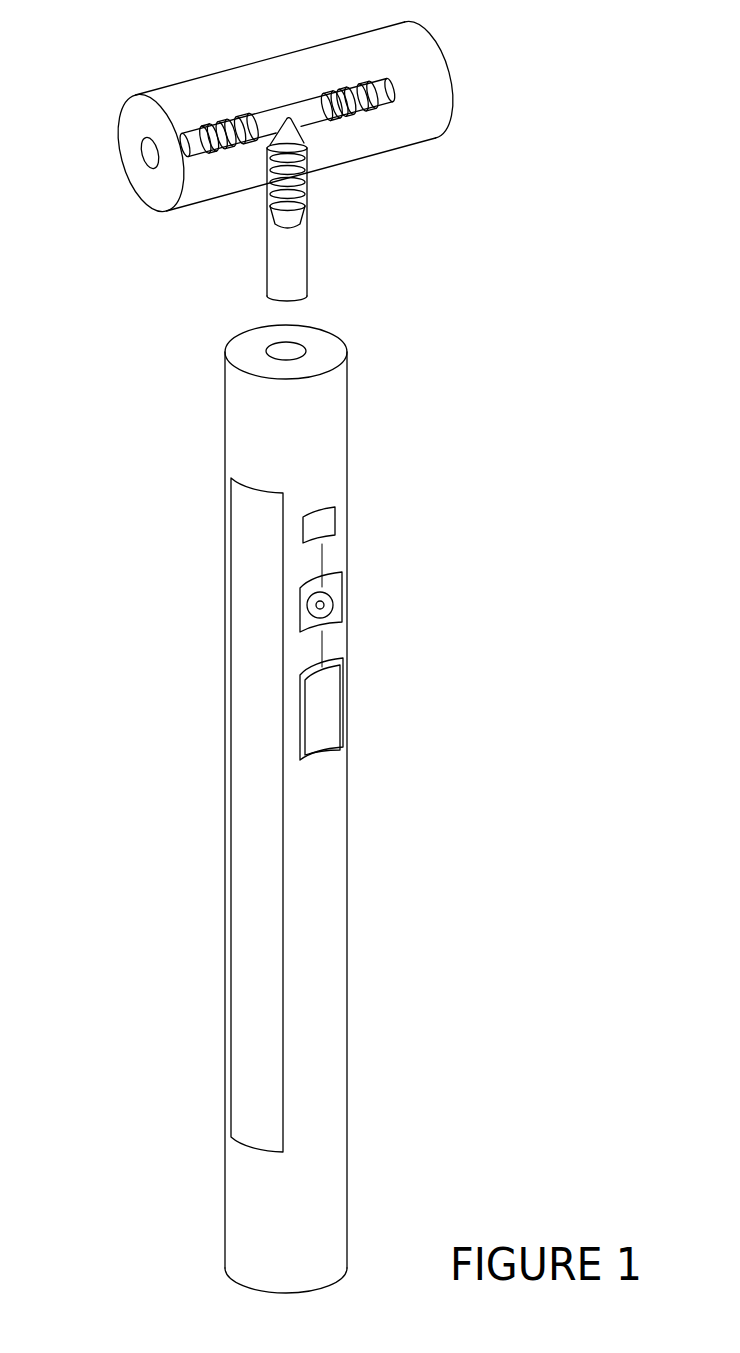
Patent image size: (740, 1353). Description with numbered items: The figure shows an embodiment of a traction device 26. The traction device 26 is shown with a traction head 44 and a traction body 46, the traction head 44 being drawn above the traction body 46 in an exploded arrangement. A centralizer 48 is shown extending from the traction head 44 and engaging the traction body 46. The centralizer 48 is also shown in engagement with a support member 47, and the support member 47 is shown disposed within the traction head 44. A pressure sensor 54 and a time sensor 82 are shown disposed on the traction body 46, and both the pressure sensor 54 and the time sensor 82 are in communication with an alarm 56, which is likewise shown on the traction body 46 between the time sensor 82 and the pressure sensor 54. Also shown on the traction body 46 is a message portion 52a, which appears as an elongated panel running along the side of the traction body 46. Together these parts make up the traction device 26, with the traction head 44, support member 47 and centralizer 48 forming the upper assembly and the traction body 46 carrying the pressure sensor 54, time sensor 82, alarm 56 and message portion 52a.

The traction device 26 is at (134, 50).
The traction head 44 is at (132, 122).
The support member 47 is at (299, 103).
The centralizer 48 is at (297, 268).
The traction body 46 is at (338, 905).
The message portion 52a is at (238, 772).
The time sensor 82 is at (333, 522).
The alarm 56 is at (332, 613).
The pressure sensor 54 is at (335, 708).